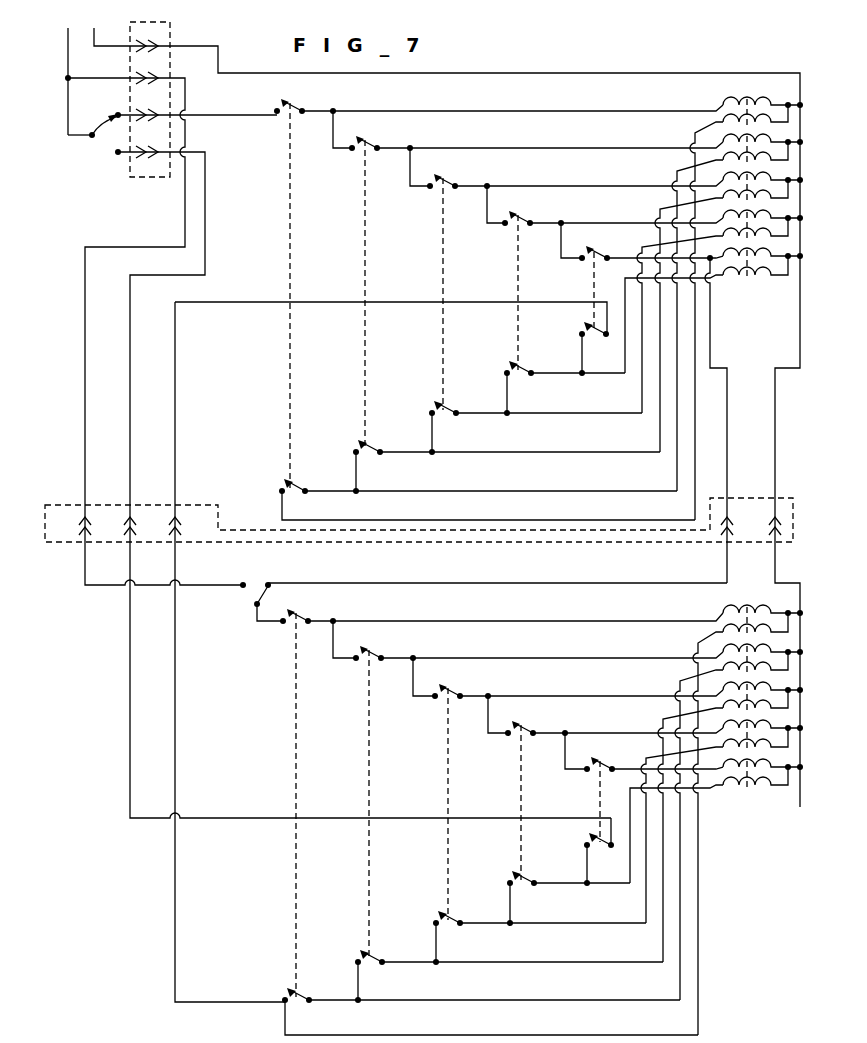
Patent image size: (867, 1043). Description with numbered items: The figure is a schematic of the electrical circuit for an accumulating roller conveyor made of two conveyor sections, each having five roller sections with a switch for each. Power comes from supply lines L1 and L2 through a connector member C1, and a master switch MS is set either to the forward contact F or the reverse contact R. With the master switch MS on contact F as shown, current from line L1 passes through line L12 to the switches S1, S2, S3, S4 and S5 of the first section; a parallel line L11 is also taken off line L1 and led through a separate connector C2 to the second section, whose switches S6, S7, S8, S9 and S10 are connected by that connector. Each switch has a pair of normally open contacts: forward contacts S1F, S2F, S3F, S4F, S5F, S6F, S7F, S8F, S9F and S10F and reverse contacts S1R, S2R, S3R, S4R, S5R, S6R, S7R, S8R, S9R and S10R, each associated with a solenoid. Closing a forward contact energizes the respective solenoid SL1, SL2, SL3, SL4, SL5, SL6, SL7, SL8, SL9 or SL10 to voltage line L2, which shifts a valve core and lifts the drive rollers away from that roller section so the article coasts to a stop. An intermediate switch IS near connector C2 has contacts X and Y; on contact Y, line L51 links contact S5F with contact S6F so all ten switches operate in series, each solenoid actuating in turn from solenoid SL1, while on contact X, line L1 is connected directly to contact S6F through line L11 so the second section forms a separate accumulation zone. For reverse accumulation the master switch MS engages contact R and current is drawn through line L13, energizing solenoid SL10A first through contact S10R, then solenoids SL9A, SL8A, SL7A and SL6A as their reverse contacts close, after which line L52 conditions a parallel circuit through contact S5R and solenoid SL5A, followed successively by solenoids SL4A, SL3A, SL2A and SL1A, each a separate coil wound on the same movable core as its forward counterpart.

The power supply line L1 is at (68, 37).
The voltage line L2 is at (94, 42).
The parallel line L11 is at (115, 78).
The line L12 is at (240, 98).
The line L13 is at (205, 248).
The line L51 is at (711, 342).
The line L52 is at (175, 312).
The master switch MS is at (100, 128).
The forward contact F is at (110, 123).
The reverse contact R is at (116, 152).
The connector member C1 is at (130, 178).
The connector C2 is at (200, 503).
The intermediate switch IS is at (253, 603).
The contact point X is at (243, 580).
The contact point Y is at (270, 582).
The switch S1 is at (285, 216).
The switch S2 is at (358, 250).
The switch S3 is at (436, 257).
The switch S4 is at (510, 274).
The switch S5 is at (586, 291).
The switch S6 is at (290, 730).
The switch S7 is at (362, 745).
The switch S8 is at (440, 770).
The switch S9 is at (512, 769).
The switch S10 is at (592, 798).
The forward contact S1F is at (290, 102).
The forward contact S2F is at (365, 139).
The forward contact S3F is at (453, 166).
The forward contact S4F is at (525, 200).
The forward contact S5F is at (592, 250).
The forward contact S6F is at (296, 612).
The forward contact S7F is at (378, 637).
The forward contact S8F is at (448, 687).
The forward contact S9F is at (514, 724).
The forward contact S10F is at (593, 759).
The reverse contact S1R is at (297, 492).
The reverse contact S2R is at (372, 453).
The reverse contact S3R is at (448, 414).
The reverse contact S4R is at (523, 374).
The reverse contact S5R is at (590, 324).
The reverse contact S6R is at (301, 1001).
The reverse contact S7R is at (374, 963).
The reverse contact S8R is at (452, 924).
The reverse contact S9R is at (526, 884).
The reverse contact S10R is at (604, 846).
The solenoid SL1 is at (766, 102).
The solenoid SL2 is at (721, 140).
The solenoid SL3 is at (721, 178).
The solenoid SL4 is at (721, 216).
The solenoid SL5 is at (721, 254).
The solenoid SL6 is at (759, 596).
The solenoid SL7 is at (721, 650).
The solenoid SL8 is at (721, 688).
The solenoid SL9 is at (721, 726).
The solenoid SL10 is at (721, 765).
The solenoid SL1A is at (716, 120).
The solenoid SL2A is at (716, 158).
The solenoid SL3A is at (716, 196).
The solenoid SL4A is at (716, 234).
The solenoid SL5A is at (731, 277).
The solenoid SL6A is at (717, 630).
The solenoid SL7A is at (716, 668).
The solenoid SL8A is at (716, 706).
The solenoid SL9A is at (716, 745).
The solenoid SL10A is at (726, 788).